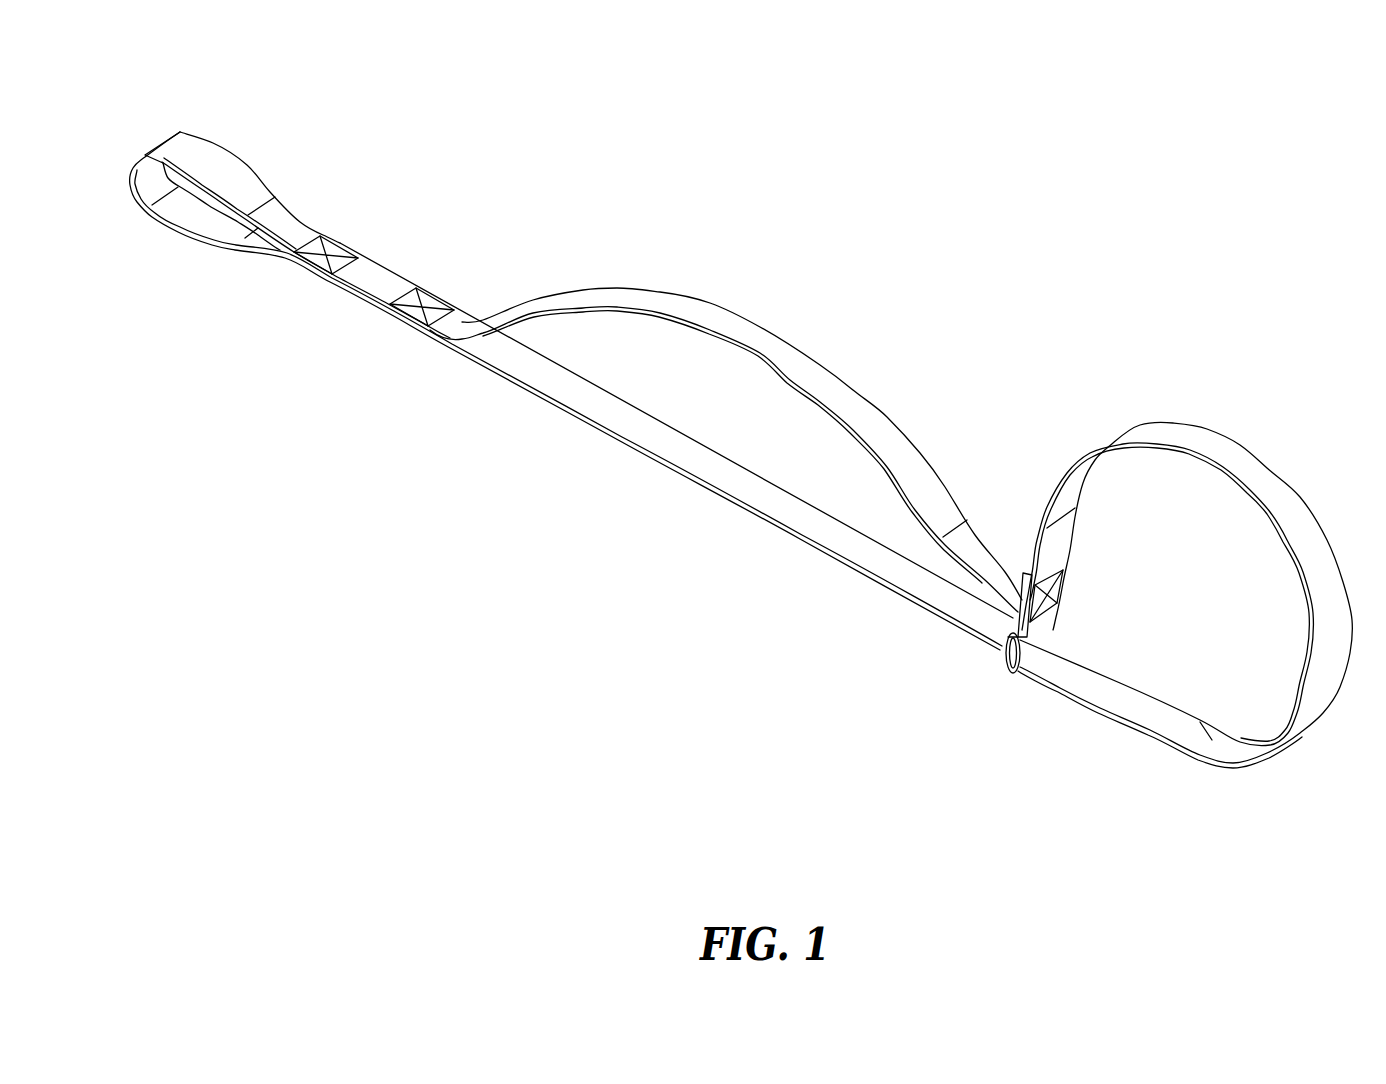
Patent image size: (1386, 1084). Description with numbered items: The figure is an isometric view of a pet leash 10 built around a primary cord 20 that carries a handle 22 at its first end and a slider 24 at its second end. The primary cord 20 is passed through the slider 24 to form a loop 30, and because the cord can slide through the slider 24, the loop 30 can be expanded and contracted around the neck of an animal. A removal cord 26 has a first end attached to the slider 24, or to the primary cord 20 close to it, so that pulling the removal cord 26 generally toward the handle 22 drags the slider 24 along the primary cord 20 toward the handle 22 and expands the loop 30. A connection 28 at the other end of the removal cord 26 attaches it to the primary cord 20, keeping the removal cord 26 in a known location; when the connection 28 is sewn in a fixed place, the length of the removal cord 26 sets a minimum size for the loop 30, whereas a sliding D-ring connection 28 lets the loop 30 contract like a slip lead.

The leash 10 is at (1233, 180).
The primary cord 20 is at (743, 487).
The handle 22 is at (213, 218).
The slider 24 is at (1003, 673).
The removal cord 26 is at (740, 332).
The connection 28 is at (432, 322).
The loop 30 is at (1232, 440).